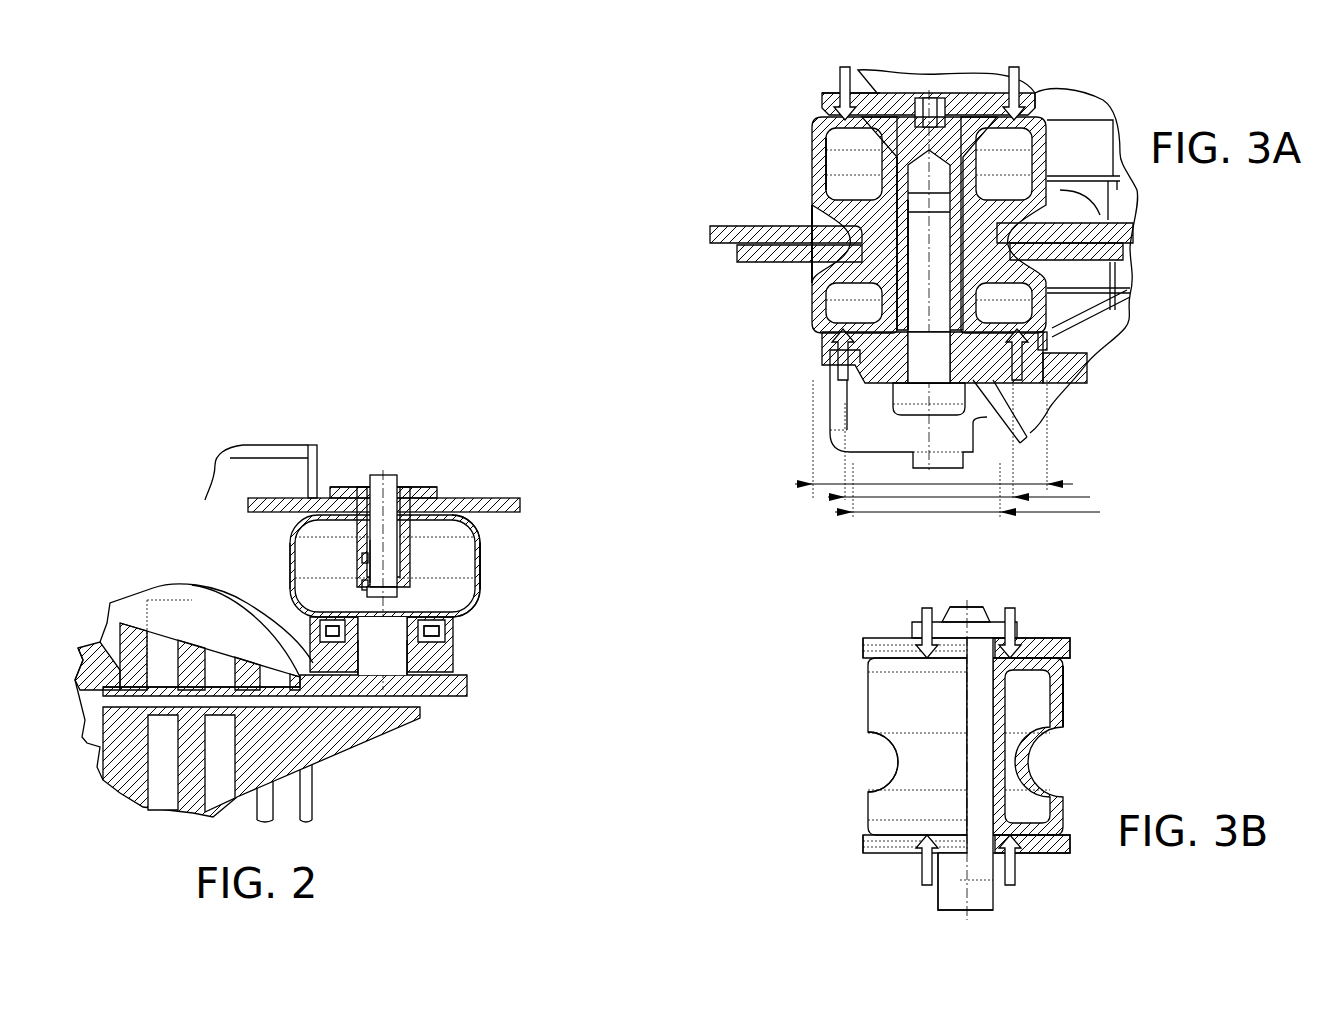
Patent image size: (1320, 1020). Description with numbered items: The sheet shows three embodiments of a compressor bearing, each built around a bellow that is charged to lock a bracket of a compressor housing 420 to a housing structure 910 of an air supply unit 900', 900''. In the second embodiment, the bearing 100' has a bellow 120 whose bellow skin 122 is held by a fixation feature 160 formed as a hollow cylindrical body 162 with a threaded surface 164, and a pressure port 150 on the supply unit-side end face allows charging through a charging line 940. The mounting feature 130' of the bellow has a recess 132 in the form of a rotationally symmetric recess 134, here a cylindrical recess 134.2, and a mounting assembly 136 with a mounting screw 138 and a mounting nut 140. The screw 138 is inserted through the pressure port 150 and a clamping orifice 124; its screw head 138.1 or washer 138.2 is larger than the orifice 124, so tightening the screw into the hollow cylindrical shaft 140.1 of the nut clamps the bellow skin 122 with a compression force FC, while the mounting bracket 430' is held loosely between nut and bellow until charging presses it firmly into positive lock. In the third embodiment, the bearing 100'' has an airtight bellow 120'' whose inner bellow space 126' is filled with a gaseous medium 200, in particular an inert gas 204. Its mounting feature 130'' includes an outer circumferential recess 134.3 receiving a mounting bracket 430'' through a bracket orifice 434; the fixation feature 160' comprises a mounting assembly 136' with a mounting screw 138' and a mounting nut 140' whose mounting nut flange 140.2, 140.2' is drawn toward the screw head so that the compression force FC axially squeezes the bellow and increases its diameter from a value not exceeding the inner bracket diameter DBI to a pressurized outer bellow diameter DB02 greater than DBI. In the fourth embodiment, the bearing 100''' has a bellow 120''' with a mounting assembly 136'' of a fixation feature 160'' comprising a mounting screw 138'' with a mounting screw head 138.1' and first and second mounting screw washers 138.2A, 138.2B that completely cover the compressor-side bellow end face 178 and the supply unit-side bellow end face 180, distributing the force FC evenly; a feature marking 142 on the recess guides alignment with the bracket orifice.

In FIG. 2, the bearing 100' is at (414, 473).
In FIG. 3A, the bearing 100'' is at (1071, 58).
In FIG. 3B, the bearing 100''' is at (1090, 636).
In FIG. 2, the air supply unit 900' is at (355, 526).
In FIG. 3A, the air supply unit 900'' is at (1024, 237).
In FIG. 2, the housing structure of the air supply unit 910 is at (460, 707).
In FIG. 2, the charging line of the housing structure 940 is at (287, 703).
In FIG. 2, the compressor housing 420 is at (318, 440).
In FIG. 2, the mounting bracket 430' is at (448, 481).
In FIG. 3A, the mounting bracket 430'' is at (861, 237).
In FIG. 3A, the bracket orifice 434 is at (1050, 332).
In FIG. 2, the bellow 120 is at (466, 566).
In FIG. 3A, the bellow 120'' is at (820, 225).
In FIG. 3B, the bellow 120''' is at (848, 746).
In FIG. 2, the bellow skin 122 is at (490, 574).
In FIG. 2, the clamping orifice 124 is at (387, 555).
In FIG. 3A, the inner bellow space 126' is at (669, 142).
In FIG. 2, the mounting feature 130' is at (543, 511).
In FIG. 3A, the mounting feature 130'' is at (613, 233).
In FIG. 3B, the mounting feature 130'' is at (1117, 740).
In FIG. 2, the recess 132 is at (438, 556).
In FIG. 3A, the recess 132 is at (797, 213).
In FIG. 3B, the recess 132 is at (1060, 762).
In FIG. 2, the rotationally symmetric recess 134 is at (438, 556).
In FIG. 3A, the rotationally symmetric recess 134 is at (797, 213).
In FIG. 3B, the rotationally symmetric recess 134 is at (1060, 762).
In FIG. 2, the cylindrical recess 134.2 is at (438, 556).
In FIG. 3A, the cylindrical recess 134.2 is at (872, 147).
In FIG. 3A, the outer circumferential recess 134.3 is at (797, 213).
In FIG. 3B, the outer circumferential recess 134.3 is at (1060, 762).
In FIG. 2, the mounting assembly 136 is at (400, 534).
In FIG. 3A, the mounting assembly 136' is at (933, 238).
In FIG. 3B, the mounting assembly 136'' is at (922, 735).
In FIG. 2, the mounting screw 138 is at (315, 537).
In FIG. 3A, the mounting screw 138' is at (798, 223).
In FIG. 3B, the mounting screw 138'' is at (914, 888).
In FIG. 2, the mounting screw head 138.1 is at (237, 567).
In FIG. 2, the mounting screw washer 138.2 is at (362, 572).
In FIG. 3A, the mounting screw head 138.1' is at (809, 381).
In FIG. 3B, the first mounting screw washer 138.2A is at (864, 644).
In FIG. 3B, the second mounting screw washer 138.2B is at (864, 843).
In FIG. 2, the mounting nut 140 is at (267, 444).
In FIG. 3A, the mounting nut 140' is at (928, 74).
In FIG. 2, the hollow cylindrical shaft of the mounting nut 140.1 is at (355, 494).
In FIG. 3A, the hollow cylindrical shaft of the mounting nut 140.1 is at (900, 187).
In FIG. 2, the mounting nut flange 140.2 is at (383, 453).
In FIG. 3A, the mounting nut flange 140.2' is at (730, 64).
In FIG. 3B, the feature marking 142 is at (864, 788).
In FIG. 2, the pressure port 150 is at (403, 665).
In FIG. 2, the fixation feature 160 is at (504, 610).
In FIG. 3A, the fixation feature 160' is at (689, 197).
In FIG. 3B, the fixation feature 160'' is at (905, 579).
In FIG. 2, the hollow cylindrical body 162 is at (450, 640).
In FIG. 2, the threaded surface of hollow cylindrical body 164 is at (452, 660).
In FIG. 3B, the first bellow end face 178 is at (1030, 648).
In FIG. 3B, the second bellow end face 180 is at (1032, 848).
In FIG. 3A, the gaseous medium 200 is at (843, 157).
In FIG. 3A, the inert gas 204 is at (843, 157).
In FIG. 2, the compression force FC is at (400, 596).
In FIG. 3A, the compression force FC is at (1016, 66).
In FIG. 3B, the compression force FC is at (1010, 625).
In FIG. 3A, the pressurized outer bellow diameter DB02 is at (1062, 480).
In FIG. 3A, the inner bracket diameter DBI is at (1030, 494).